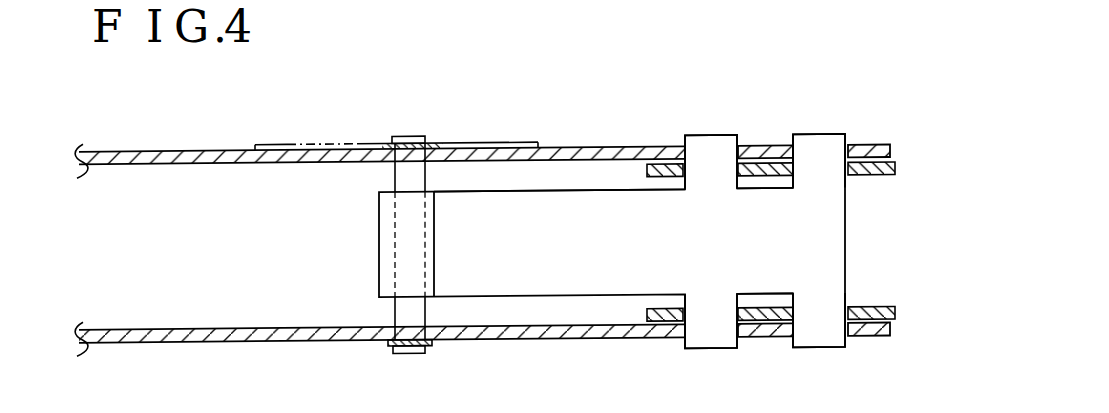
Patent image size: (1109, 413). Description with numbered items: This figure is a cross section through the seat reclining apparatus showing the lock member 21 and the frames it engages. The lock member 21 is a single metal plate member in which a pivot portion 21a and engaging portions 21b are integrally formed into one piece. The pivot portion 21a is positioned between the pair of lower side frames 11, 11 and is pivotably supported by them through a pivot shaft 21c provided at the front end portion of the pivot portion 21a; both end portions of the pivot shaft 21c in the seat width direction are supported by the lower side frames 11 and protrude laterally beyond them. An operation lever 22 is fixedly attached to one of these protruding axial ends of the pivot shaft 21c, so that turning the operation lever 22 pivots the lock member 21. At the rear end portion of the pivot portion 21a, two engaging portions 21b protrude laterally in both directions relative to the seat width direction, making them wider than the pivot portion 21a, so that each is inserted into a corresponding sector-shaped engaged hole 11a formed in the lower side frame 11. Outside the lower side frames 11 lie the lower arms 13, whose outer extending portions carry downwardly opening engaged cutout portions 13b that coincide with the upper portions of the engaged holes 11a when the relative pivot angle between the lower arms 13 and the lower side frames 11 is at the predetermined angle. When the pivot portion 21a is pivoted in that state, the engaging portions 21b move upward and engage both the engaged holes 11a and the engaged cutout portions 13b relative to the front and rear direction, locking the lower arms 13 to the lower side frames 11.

The lower side frame 11 is at (185, 154).
The engaged hole 11a is at (690, 151).
The lower arm 13 is at (896, 176).
The engaged cutout portion 13b is at (740, 175).
The lock member 21 is at (550, 306).
The pivot portion 21a is at (580, 208).
The engaging portion 21b is at (795, 142).
The pivot shaft 21c is at (398, 183).
The operation lever 22 is at (330, 147).